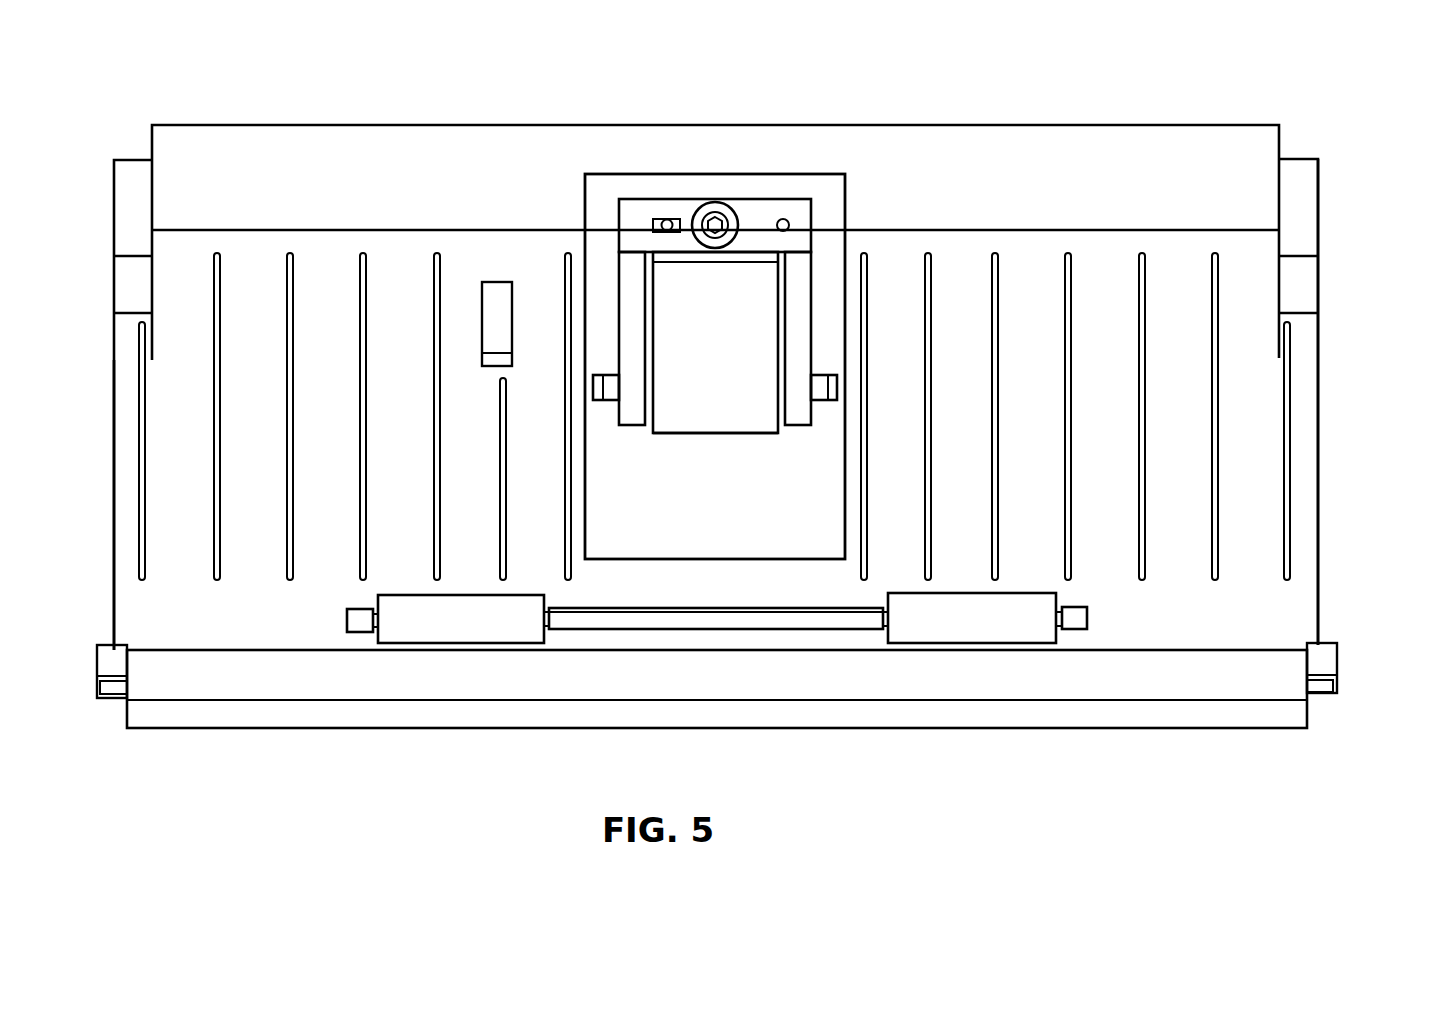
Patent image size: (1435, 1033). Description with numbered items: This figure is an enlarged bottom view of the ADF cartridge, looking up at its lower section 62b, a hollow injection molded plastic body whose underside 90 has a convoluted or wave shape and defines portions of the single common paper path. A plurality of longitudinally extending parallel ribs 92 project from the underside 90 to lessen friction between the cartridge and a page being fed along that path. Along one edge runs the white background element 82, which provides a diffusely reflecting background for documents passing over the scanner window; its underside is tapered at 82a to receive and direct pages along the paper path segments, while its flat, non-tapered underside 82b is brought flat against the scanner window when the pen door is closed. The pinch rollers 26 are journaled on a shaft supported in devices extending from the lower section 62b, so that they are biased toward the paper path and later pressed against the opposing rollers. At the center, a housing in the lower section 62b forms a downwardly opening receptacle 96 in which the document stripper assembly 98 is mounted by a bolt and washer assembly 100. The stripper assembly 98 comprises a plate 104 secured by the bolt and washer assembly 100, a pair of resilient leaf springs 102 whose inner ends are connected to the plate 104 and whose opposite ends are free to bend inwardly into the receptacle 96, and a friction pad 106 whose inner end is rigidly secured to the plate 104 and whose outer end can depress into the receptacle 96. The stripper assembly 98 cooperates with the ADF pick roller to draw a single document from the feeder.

The pinch rollers 26 is at (475, 631).
The lower section of the ADF cartridge 62b is at (1320, 457).
The white background element 82 is at (1236, 677).
The tapered underside of the white background element 82a is at (297, 718).
The flat non-tapered underside of the white background element 82b is at (1094, 683).
The underside of the lower ADF cartridge section 90 is at (1124, 441).
The ribs 92 is at (363, 360).
The receptacle 96 is at (818, 550).
The document stripper assembly 98 is at (733, 458).
The bolt and washer assembly 100 is at (726, 203).
The leaf springs 102 is at (632, 427).
The plate 104 is at (762, 205).
The friction pad 106 is at (690, 357).